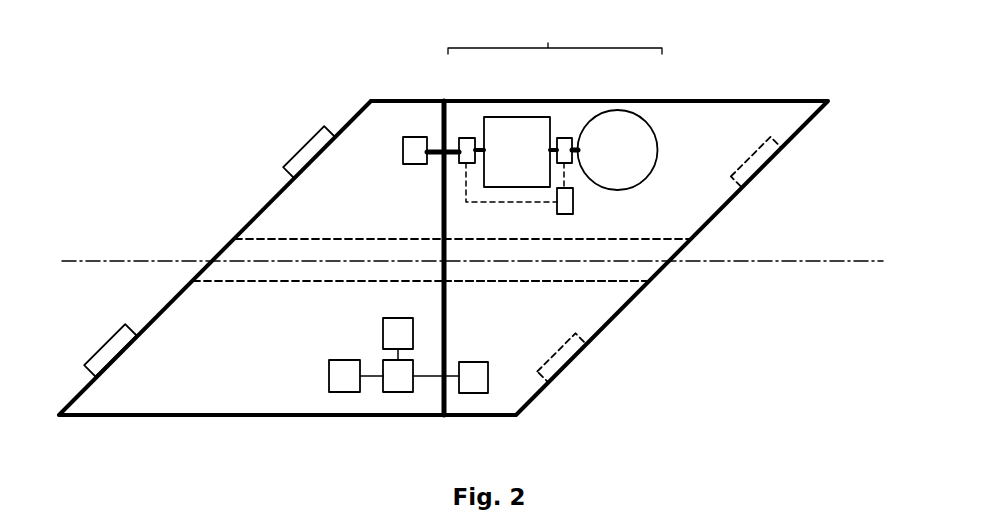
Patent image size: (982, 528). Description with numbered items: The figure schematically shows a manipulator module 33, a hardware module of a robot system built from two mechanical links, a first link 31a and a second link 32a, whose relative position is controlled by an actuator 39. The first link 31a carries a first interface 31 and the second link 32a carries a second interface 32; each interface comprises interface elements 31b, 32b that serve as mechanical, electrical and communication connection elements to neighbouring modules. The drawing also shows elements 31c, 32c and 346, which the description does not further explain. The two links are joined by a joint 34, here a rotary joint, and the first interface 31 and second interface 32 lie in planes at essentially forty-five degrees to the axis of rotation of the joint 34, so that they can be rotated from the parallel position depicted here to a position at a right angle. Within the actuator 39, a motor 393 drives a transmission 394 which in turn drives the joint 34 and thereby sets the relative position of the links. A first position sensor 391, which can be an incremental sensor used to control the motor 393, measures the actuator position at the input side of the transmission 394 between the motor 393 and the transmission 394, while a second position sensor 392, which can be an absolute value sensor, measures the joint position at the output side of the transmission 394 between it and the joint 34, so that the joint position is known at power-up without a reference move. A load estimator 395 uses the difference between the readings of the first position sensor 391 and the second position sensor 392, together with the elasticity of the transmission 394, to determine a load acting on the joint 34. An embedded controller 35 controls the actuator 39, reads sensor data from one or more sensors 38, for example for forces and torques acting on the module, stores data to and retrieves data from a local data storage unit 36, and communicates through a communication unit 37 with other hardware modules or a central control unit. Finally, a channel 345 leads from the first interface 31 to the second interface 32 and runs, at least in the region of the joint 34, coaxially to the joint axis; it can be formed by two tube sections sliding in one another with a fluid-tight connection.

The first interface 31 is at (170, 213).
The first link 31a is at (378, 110).
The interface elements 31b is at (293, 158).
The guide rail of first frame part 31c is at (239, 281).
The second interface 32 is at (692, 285).
The second link 32a is at (765, 112).
The interface elements 32b is at (572, 357).
The guide rail of second frame part 32c is at (480, 281).
The manipulator module 33 is at (197, 98).
The joint 34 is at (443, 100).
The channel 345 is at (298, 281).
The coupling element 346 is at (408, 135).
The embedded controller 35 is at (398, 389).
The local data storage unit 36 is at (336, 389).
The communication unit 37 is at (383, 337).
The sensors 38 is at (476, 380).
The actuator 39 is at (555, 36).
The first position sensor 391 is at (564, 137).
The second position sensor 392 is at (470, 137).
The motor 393 is at (635, 122).
The transmission 394 is at (515, 132).
The load estimator 395 is at (573, 205).